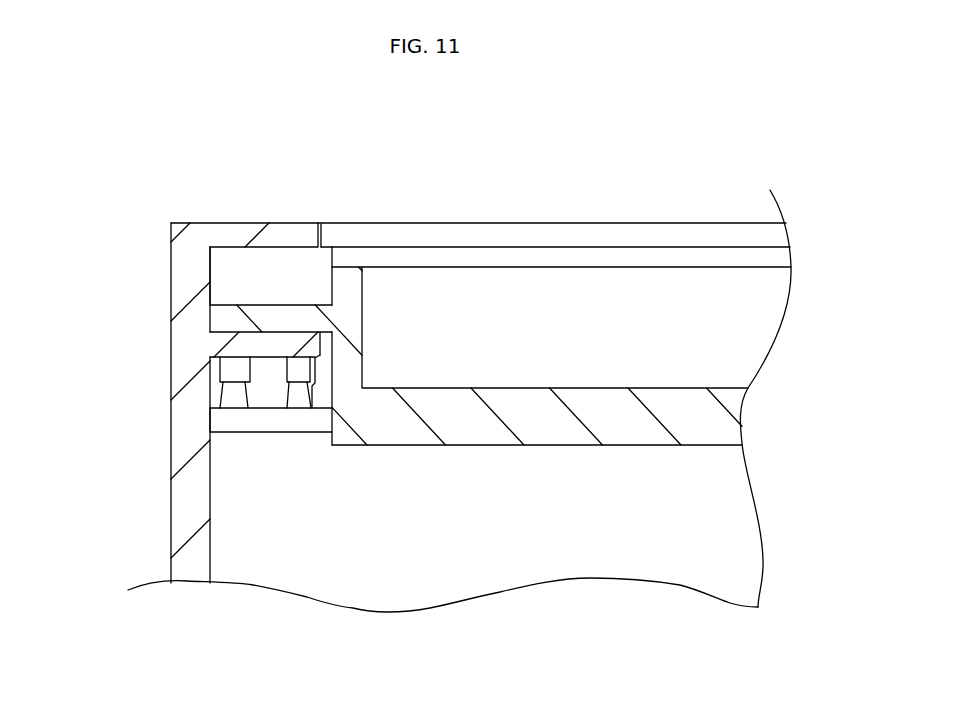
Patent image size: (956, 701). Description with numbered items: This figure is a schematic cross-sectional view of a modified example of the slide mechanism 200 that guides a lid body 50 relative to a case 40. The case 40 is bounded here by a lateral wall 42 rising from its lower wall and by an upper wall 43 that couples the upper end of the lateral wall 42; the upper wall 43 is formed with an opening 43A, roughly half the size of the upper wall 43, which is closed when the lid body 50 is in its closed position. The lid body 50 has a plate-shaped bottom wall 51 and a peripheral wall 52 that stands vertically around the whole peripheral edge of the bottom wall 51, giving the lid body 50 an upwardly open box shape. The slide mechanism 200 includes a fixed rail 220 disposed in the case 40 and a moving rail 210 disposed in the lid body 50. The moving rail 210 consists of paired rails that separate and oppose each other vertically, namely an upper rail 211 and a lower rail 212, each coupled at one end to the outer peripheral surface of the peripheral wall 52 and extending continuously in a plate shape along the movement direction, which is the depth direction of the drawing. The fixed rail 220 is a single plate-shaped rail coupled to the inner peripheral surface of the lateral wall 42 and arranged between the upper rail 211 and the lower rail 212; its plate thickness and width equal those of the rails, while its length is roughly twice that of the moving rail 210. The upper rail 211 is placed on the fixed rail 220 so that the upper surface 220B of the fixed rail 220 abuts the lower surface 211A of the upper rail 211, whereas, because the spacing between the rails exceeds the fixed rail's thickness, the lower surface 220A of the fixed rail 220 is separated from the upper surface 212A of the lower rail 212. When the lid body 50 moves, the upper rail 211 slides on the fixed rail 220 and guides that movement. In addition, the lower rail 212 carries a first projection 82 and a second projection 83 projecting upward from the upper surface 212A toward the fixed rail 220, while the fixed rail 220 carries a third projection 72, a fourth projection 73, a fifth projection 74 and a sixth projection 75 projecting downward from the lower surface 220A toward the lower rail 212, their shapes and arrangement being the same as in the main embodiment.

The case 40 is at (444, 349).
The lateral wall 42 is at (171, 249).
The upper wall 43 is at (227, 223).
The opening 43A is at (320, 237).
The lid body 50 is at (514, 377).
The bottom wall 51 is at (590, 386).
The peripheral wall 52 is at (362, 290).
The third projection 72 is at (374, 367).
The fourth projection 73 is at (316, 372).
The fifth projection 74 is at (162, 393).
The sixth projection 75 is at (222, 392).
The first projection 82 is at (332, 397).
The second projection 83 is at (220, 402).
The slide mechanism 200 is at (279, 351).
The moving rail 210 is at (279, 338).
The upper rail 211 is at (271, 248).
The lower surface 211A is at (265, 340).
The lower rail 212 is at (274, 448).
The upper surface 212A is at (258, 398).
The fixed rail 220 is at (215, 360).
The lower surface 220A is at (209, 381).
The upper surface 220B is at (213, 325).